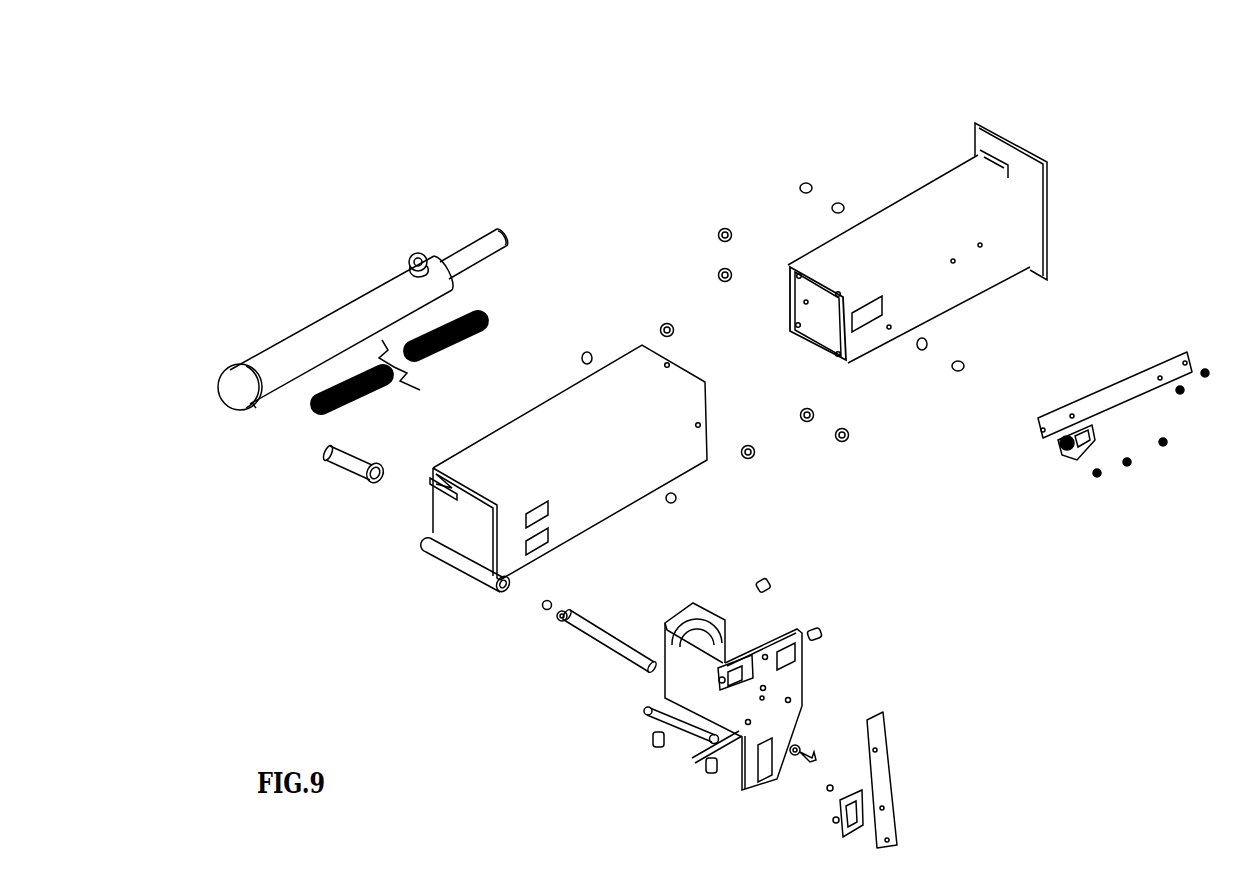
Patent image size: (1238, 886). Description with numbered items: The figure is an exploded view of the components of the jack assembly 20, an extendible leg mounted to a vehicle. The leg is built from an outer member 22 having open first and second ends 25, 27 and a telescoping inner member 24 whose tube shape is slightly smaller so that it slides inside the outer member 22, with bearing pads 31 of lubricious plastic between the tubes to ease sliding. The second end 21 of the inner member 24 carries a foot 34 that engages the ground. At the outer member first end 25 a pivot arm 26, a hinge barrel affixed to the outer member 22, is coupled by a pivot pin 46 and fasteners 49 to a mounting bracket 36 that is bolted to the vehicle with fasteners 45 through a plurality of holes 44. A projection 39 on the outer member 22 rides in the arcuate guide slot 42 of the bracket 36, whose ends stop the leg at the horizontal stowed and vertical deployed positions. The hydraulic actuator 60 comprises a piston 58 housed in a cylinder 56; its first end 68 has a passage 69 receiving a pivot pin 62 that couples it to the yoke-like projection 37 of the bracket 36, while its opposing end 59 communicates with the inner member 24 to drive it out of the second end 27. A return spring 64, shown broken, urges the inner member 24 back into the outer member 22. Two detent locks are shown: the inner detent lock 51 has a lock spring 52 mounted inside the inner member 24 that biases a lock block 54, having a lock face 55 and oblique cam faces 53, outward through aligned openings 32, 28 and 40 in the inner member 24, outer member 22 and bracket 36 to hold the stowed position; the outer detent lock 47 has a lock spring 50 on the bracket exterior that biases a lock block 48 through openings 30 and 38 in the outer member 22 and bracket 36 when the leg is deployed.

The jack assembly 20 is at (230, 68).
The second end of inner member 21 is at (1049, 222).
The outer member 22 is at (492, 440).
The inner member 24 is at (936, 190).
The first end of outer member 25 is at (462, 516).
The pivot arm 26 is at (457, 568).
The second end of outer member 27 is at (718, 402).
The opening 28 is at (546, 505).
The opening 30 is at (550, 530).
The bearing pads 31 is at (720, 240).
The opening 32 is at (862, 302).
The foot 34 is at (1012, 144).
The mounting bracket 36 is at (744, 790).
The yoke-like projection 37 is at (730, 652).
The opening 38 is at (788, 746).
The projection 39 is at (428, 490).
The opening 40 is at (790, 632).
The guide slot 42 is at (710, 620).
The holes 44 is at (668, 638).
The fasteners 45 is at (654, 744).
The pivot pin 46 is at (598, 642).
The outer detent lock 47 is at (917, 715).
The lock block 48 is at (844, 834).
The fasteners 49 is at (550, 602).
The lock spring 50 is at (884, 768).
The inner detent lock 51 is at (1166, 446).
The lock spring 52 is at (1114, 388).
The cam face 53 is at (1092, 445).
The lock block 54 is at (1070, 458).
The lock face 55 is at (1094, 458).
The cylinder 56 is at (332, 318).
The piston 58 is at (458, 252).
The opposing end of actuator 59 is at (503, 232).
The hydraulic actuator 60 is at (388, 250).
The pivot pin 62 is at (350, 478).
The return spring 64 is at (478, 332).
The first end of actuator 68 is at (230, 372).
The passage 69 is at (258, 404).